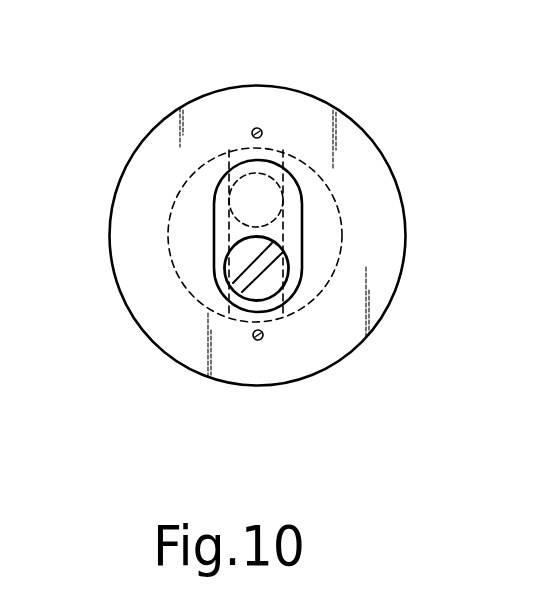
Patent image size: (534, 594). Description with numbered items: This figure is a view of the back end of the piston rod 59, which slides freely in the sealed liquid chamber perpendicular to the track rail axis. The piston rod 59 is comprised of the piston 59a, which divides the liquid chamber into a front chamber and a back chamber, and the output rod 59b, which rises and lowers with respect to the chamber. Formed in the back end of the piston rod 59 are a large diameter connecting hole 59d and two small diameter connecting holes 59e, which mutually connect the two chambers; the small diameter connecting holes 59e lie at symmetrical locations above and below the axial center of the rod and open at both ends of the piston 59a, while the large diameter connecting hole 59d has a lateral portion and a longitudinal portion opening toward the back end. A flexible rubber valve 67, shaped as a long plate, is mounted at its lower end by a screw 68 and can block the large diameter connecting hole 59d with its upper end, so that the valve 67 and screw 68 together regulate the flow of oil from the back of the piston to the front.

The piston rod 59 is at (380, 146).
The piston 59a is at (382, 203).
The output rod 59b is at (335, 241).
The large diameter connecting hole 59d is at (233, 183).
The small diameter connecting holes 59e is at (253, 128).
The valve 67 is at (295, 242).
The screw 68 is at (272, 282).